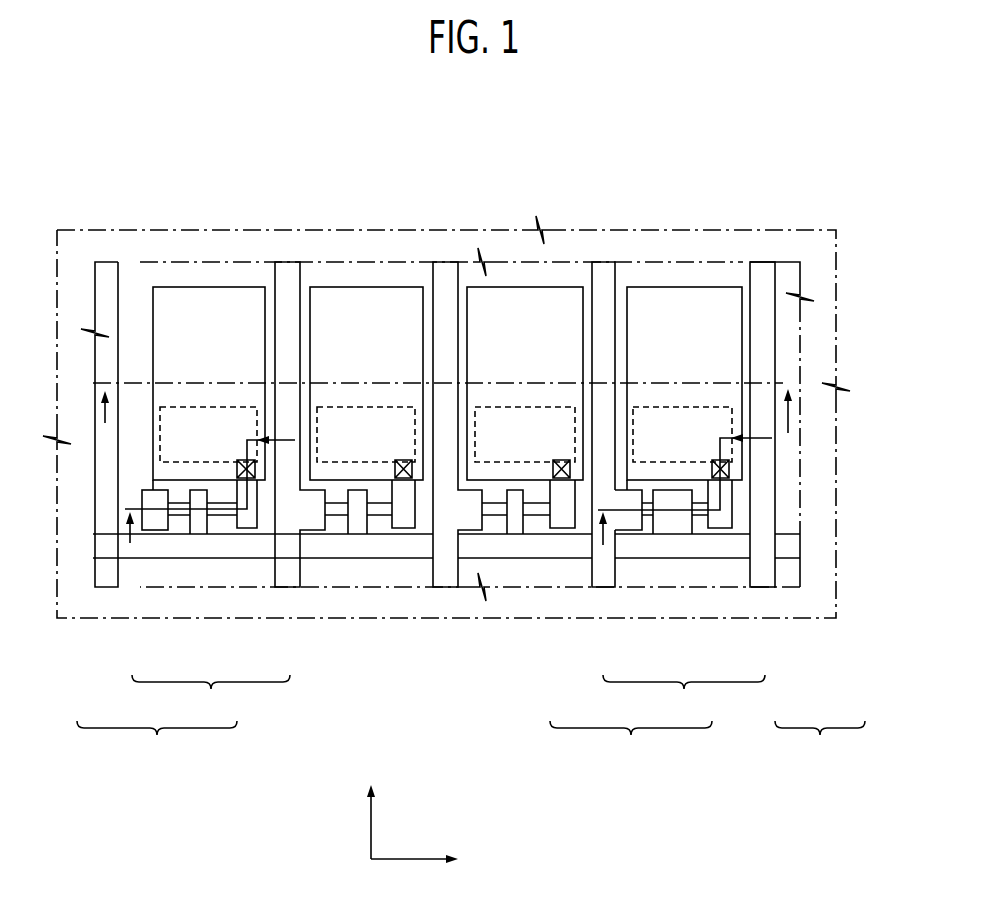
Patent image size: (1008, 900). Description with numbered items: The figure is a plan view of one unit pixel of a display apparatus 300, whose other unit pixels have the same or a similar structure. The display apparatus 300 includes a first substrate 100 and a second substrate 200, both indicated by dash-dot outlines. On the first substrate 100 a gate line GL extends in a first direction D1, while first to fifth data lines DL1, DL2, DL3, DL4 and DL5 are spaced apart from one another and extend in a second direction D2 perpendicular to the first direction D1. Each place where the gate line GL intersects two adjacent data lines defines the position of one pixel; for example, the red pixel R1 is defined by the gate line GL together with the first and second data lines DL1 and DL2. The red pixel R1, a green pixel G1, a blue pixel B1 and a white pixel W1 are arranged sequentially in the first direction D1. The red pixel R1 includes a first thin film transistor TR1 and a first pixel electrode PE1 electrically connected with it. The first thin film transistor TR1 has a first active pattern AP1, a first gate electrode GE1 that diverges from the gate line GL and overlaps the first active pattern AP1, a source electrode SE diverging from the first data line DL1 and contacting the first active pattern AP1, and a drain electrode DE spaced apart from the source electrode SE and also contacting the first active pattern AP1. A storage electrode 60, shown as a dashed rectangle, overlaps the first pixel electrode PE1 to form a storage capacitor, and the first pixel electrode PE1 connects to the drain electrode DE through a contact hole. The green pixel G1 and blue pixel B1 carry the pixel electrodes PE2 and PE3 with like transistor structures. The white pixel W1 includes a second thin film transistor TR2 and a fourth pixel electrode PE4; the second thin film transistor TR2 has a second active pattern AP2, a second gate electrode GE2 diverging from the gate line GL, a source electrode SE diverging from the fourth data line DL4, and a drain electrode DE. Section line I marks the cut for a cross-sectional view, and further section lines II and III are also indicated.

The first data line DL1 is at (132, 274).
The second data line DL2 is at (290, 274).
The third data line DL3 is at (447, 274).
The fourth data line DL4 is at (606, 275).
The fifth data line DL5 is at (765, 275).
The gate line GL is at (795, 550).
The storage electrode 60 is at (226, 407).
The green pixel G1 is at (393, 355).
The blue pixel B1 is at (551, 355).
The first pixel electrode PE1 is at (153, 465).
The second pixel electrode PE2 is at (311, 366).
The third pixel electrode PE3 is at (469, 366).
The fourth pixel electrode PE4 is at (627, 468).
The source electrode SE is at (152, 518).
The first gate electrode GE1 is at (198, 522).
The second gate electrode GE2 is at (675, 523).
The first active pattern AP1 is at (223, 512).
The second active pattern AP2 is at (698, 513).
The drain electrode DE is at (247, 520).
The first thin film transistor TR1 is at (211, 699).
The second thin film transistor TR2 is at (684, 699).
The red pixel R1 is at (157, 744).
The white pixel W1 is at (631, 744).
The first substrate 100 is at (796, 600).
The second substrate 200 is at (832, 630).
The display apparatus 300 is at (820, 744).
The line I-I' I is at (210, 511).
The section line II-II' II is at (446, 426).
The section line III-III' III is at (684, 509).
The first direction D1 is at (428, 862).
The second direction D2 is at (370, 807).